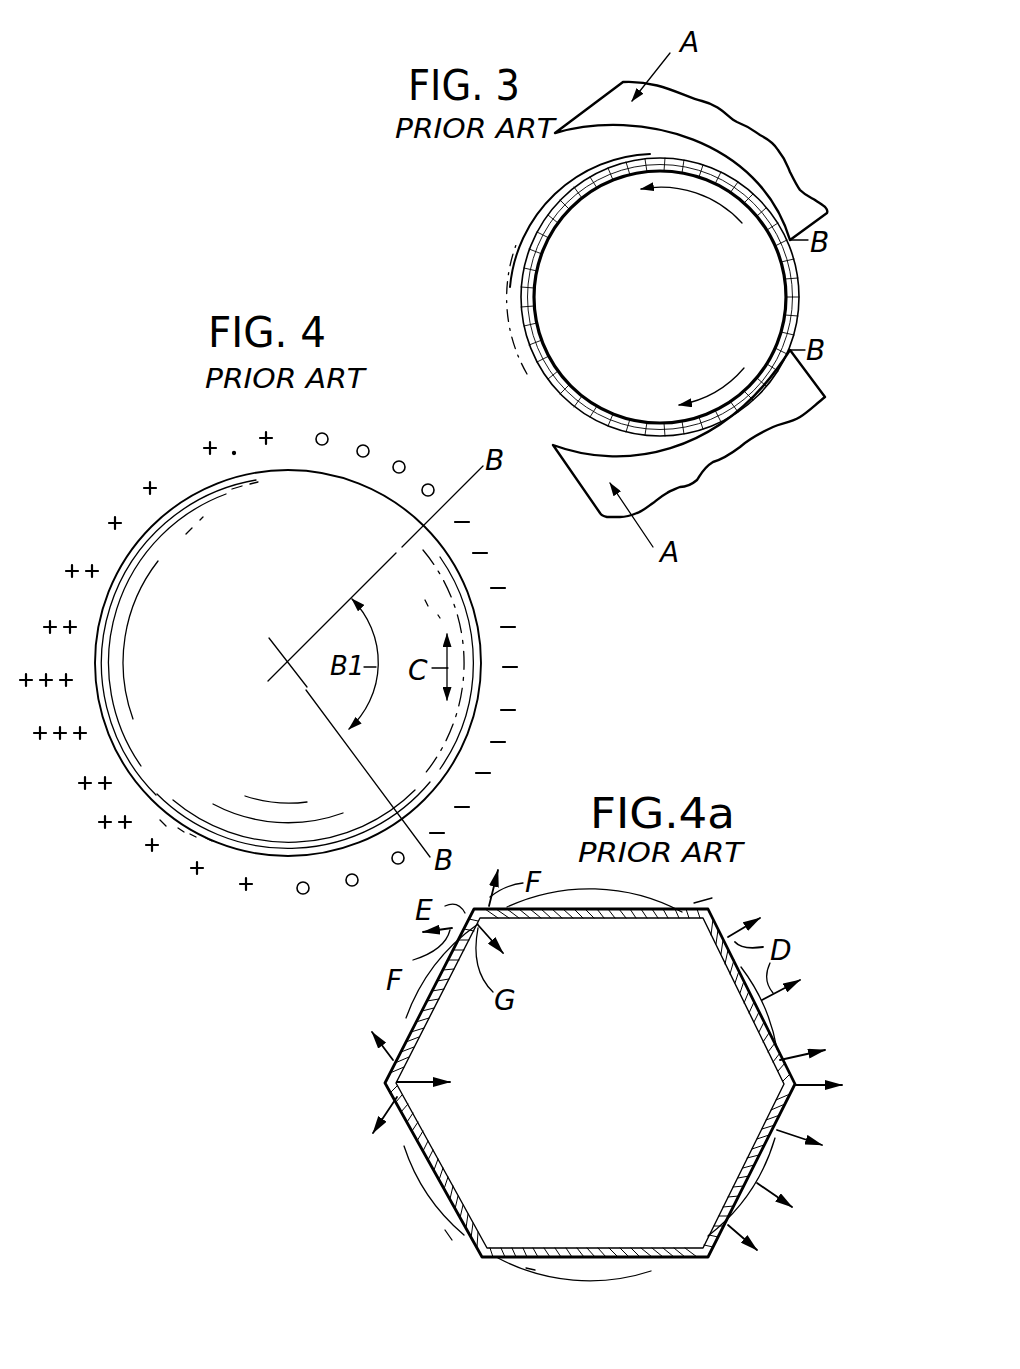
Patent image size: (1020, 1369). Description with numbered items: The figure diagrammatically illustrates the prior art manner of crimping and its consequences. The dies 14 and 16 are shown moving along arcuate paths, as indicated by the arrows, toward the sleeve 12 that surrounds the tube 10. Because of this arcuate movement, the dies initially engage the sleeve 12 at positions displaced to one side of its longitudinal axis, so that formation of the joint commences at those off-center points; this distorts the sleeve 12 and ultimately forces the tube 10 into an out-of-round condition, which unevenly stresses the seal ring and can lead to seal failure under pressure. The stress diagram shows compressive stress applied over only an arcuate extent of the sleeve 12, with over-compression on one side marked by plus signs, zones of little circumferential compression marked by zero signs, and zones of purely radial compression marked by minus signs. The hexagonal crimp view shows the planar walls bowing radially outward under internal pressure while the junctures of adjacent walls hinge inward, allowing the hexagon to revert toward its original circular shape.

In FIG. 3, the cylindrical tube 10 is at (540, 237).
In FIG. 3, the sleeve 12 is at (535, 244).
In FIG. 4, the sleeve 12 is at (97, 692).
In FIG. 4A, the sleeve 12 is at (438, 1162).
In FIG. 3, the die 14 is at (773, 163).
In FIG. 3, the die 16 is at (789, 410).